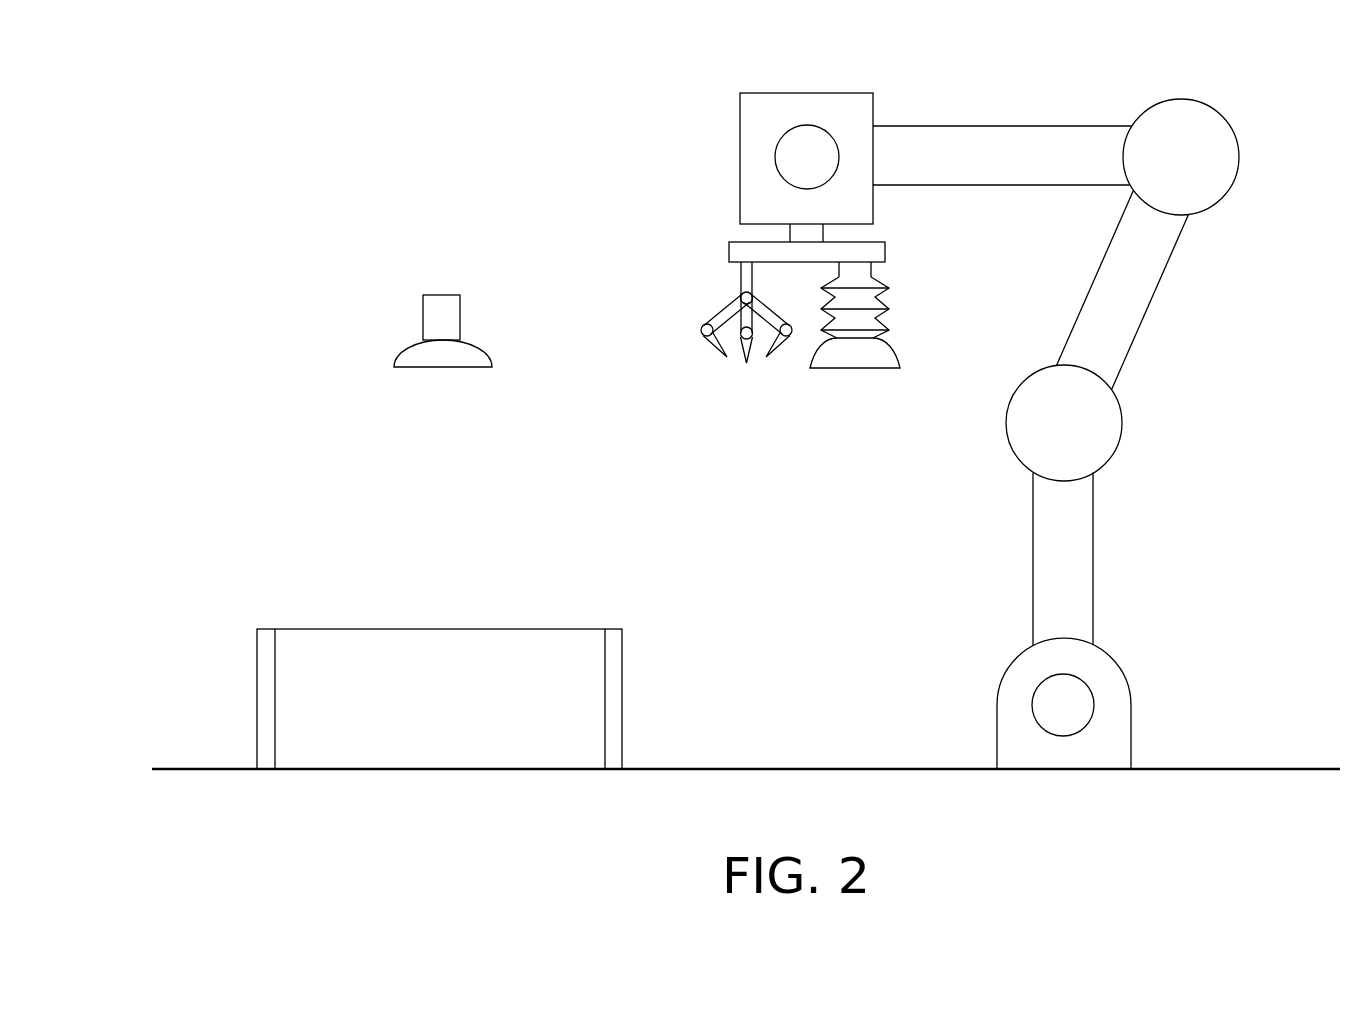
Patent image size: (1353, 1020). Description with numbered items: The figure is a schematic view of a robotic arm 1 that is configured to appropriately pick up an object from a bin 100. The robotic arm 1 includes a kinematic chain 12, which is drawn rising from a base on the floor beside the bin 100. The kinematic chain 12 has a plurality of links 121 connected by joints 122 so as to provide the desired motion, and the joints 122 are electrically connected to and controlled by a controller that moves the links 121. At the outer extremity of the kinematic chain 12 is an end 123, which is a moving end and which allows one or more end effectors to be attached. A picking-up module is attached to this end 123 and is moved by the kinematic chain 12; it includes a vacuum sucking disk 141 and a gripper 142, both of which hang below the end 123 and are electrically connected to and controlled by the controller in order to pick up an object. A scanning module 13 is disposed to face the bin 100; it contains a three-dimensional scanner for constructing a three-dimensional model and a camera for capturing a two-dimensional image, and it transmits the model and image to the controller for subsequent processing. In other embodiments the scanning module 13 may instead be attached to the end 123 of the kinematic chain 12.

The robotic arm 1 is at (1250, 76).
The kinematic chain 12 is at (1093, 116).
The links 121 is at (973, 147).
The joints 122 is at (1217, 158).
The end 123 is at (752, 163).
The vacuum sucking disk 141 is at (883, 345).
The gripper 142 is at (722, 312).
The scanning module 13 is at (430, 320).
The bin 100 is at (264, 680).